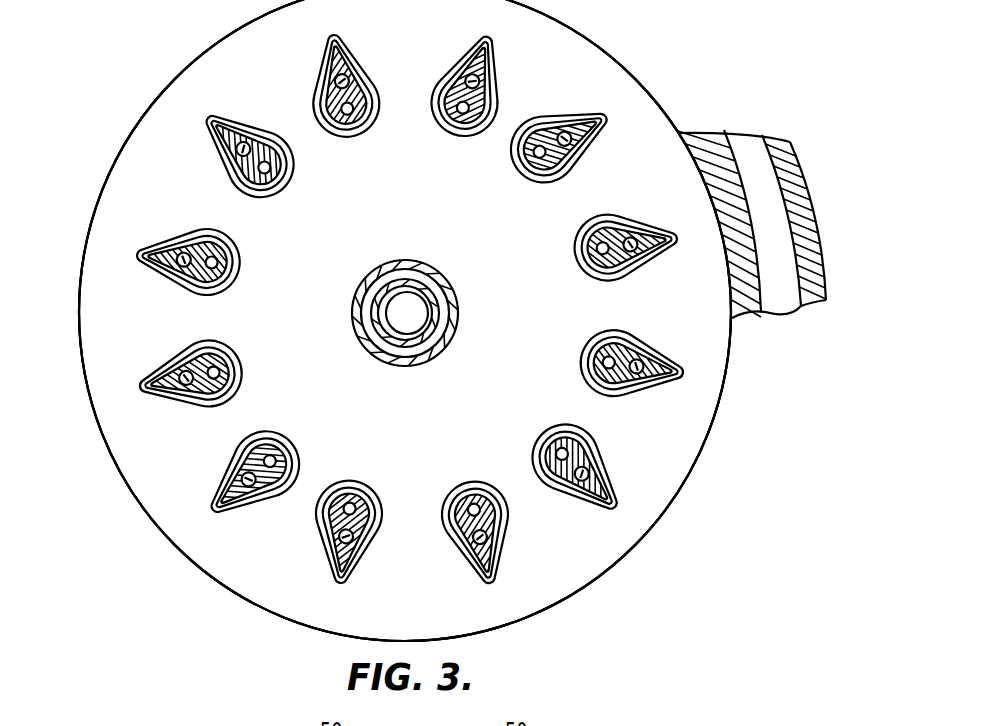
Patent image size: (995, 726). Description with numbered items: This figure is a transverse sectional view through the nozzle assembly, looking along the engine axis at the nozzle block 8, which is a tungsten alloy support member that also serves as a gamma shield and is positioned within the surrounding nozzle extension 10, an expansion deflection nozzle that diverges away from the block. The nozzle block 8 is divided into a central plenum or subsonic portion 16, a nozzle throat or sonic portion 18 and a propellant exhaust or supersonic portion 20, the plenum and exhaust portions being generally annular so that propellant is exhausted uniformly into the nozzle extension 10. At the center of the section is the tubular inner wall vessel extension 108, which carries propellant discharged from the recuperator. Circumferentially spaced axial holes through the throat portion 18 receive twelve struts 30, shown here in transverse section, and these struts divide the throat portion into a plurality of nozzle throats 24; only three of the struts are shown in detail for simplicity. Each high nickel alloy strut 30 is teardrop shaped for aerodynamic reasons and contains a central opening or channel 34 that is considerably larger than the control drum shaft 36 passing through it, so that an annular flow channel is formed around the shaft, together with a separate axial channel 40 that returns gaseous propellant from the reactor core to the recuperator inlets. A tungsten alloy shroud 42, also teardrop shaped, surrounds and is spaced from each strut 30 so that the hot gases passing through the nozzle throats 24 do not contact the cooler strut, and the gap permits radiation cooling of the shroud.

The nozzle block 8 is at (720, 143).
The nozzle extension 10 is at (826, 292).
The central plenum or subsonic portion 16 is at (401, 439).
The nozzle throat or sonic portion 18 is at (178, 431).
The propellant exhaust or supersonic portion 20 is at (98, 399).
The nozzle throats 24 is at (410, 312).
The strut 30 is at (612, 497).
The central opening or channel 34 is at (597, 468).
The control drum shaft 36 is at (584, 470).
The axial channel 40 is at (554, 451).
The shroud 42 is at (556, 424).
The inner wall vessel extension 108 is at (446, 318).